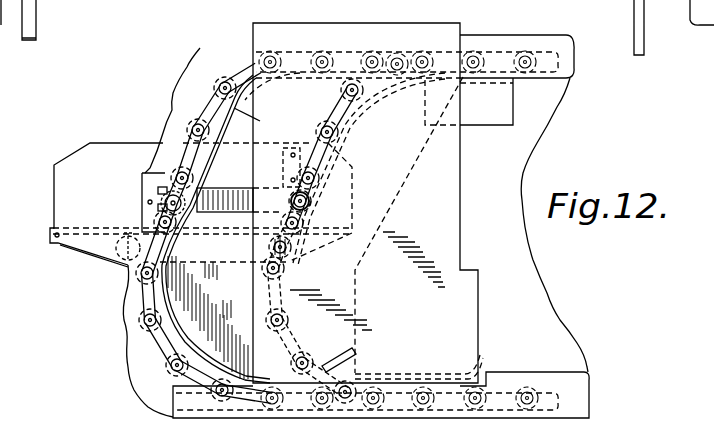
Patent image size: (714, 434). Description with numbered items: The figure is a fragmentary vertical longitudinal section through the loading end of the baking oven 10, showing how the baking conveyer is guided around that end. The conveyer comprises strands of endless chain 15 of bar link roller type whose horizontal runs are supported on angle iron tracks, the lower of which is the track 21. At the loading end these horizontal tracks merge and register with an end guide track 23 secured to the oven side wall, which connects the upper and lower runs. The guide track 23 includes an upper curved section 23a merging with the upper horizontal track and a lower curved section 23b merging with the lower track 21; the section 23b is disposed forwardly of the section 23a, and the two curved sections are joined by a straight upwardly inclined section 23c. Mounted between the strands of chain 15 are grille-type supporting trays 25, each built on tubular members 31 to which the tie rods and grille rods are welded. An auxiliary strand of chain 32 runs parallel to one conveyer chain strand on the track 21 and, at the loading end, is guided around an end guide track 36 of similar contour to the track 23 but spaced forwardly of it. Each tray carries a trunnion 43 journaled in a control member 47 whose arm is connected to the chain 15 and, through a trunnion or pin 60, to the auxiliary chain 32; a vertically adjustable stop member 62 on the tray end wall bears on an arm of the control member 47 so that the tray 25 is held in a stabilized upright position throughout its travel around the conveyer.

The baking oven 10 is at (58, 402).
The endless chain 15 is at (238, 68).
The angle iron track 21 is at (557, 42).
The end guide track 23 is at (205, 168).
The upper curved section 23a is at (262, 120).
The lower curved section 23b is at (167, 340).
The straight upwardly inclined section 23c is at (175, 259).
The supporting tray 25 is at (76, 192).
The tubular member 31 is at (122, 243).
The auxiliary strand of chain 32 is at (328, 107).
The end guide track 36 is at (340, 132).
The trunnion 43 is at (160, 196).
The control member 47 is at (248, 189).
The trunnion or pin 60 is at (302, 202).
The stop member 62 is at (284, 154).